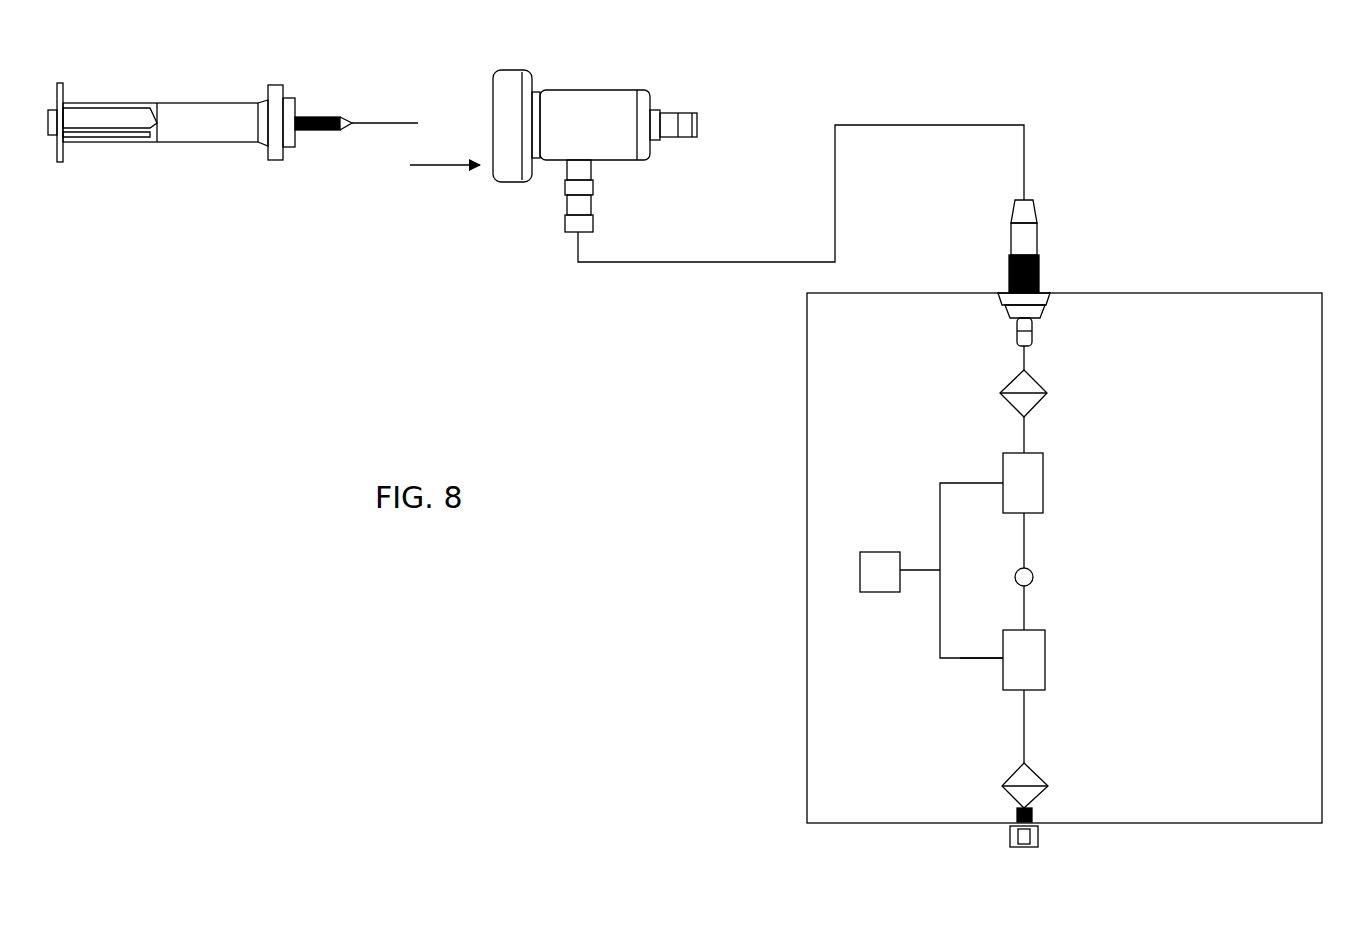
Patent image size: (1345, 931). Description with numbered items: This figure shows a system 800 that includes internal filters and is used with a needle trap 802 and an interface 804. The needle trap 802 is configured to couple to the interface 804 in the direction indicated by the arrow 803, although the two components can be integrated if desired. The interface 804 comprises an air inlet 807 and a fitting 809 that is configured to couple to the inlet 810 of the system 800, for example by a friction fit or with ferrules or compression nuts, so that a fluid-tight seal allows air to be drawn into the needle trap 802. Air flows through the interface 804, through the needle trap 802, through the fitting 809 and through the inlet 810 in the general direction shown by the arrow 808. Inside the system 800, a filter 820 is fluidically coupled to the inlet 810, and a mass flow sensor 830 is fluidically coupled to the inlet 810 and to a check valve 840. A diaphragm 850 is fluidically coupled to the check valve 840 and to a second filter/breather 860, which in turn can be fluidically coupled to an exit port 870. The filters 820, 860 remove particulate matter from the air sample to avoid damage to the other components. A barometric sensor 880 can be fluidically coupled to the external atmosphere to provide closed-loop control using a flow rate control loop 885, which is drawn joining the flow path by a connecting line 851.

The system 800 is at (742, 603).
The needle trap 802 is at (222, 97).
The arrow 803 is at (410, 166).
The interface 804 is at (622, 85).
The air inlet 807 is at (702, 113).
The arrow 808 is at (757, 247).
The fitting 809 is at (572, 210).
The inlet 810 is at (1040, 270).
The filter 820 is at (1033, 388).
The mass flow sensor 830 is at (1048, 472).
The check valve 840 is at (1040, 574).
The diaphragm 850 is at (1050, 654).
The connecting line 851 is at (985, 657).
The second filter/breather 860 is at (1048, 780).
The exit port 870 is at (1038, 835).
The barometric sensor 880 is at (878, 597).
The flow rate control loop 885 is at (935, 495).